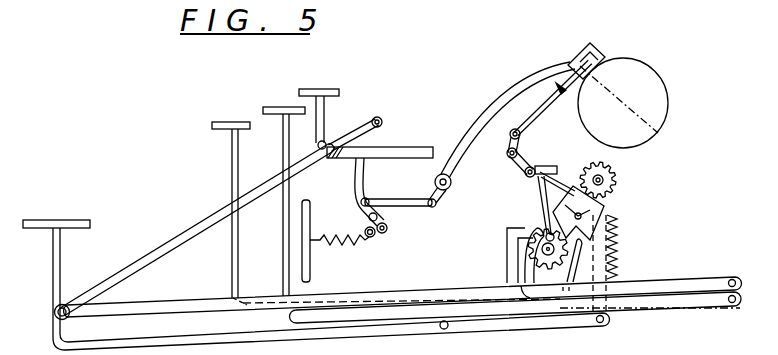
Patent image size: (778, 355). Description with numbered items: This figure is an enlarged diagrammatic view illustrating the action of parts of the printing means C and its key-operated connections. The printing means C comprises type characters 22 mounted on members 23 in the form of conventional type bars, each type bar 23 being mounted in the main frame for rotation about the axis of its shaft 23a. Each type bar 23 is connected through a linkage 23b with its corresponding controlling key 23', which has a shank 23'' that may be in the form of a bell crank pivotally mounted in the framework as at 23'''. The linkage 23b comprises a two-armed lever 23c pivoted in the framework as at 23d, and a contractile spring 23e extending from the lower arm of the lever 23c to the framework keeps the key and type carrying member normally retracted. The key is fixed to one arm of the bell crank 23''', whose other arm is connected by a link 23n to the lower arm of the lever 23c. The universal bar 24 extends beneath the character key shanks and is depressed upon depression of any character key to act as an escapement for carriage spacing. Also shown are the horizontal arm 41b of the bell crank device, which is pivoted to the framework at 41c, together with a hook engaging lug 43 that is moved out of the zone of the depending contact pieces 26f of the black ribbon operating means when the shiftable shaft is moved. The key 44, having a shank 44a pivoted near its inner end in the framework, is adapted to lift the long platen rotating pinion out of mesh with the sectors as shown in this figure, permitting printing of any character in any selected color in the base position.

The type character 22 is at (580, 61).
The printing means C is at (538, 130).
The depending contact piece 26f is at (541, 198).
The hook engaging finger or lug 43 is at (547, 203).
The pivot of bell crank device 41c is at (610, 196).
The horizontal arm of bell crank device 41b is at (572, 258).
The universal bar 24 is at (386, 152).
The key 44 is at (44, 223).
The key shank 44a is at (446, 330).
The controlling key 23' is at (212, 191).
The key shank 23'' is at (348, 192).
The bell crank pivot 23''' is at (372, 122).
The shaft 23a is at (443, 163).
The linkage 23b is at (362, 207).
The two-armed lever 23c is at (388, 228).
The lever pivot 23d is at (378, 216).
The contractile spring 23e is at (345, 243).
The link 23n is at (379, 235).
The type bar 23 is at (508, 120).